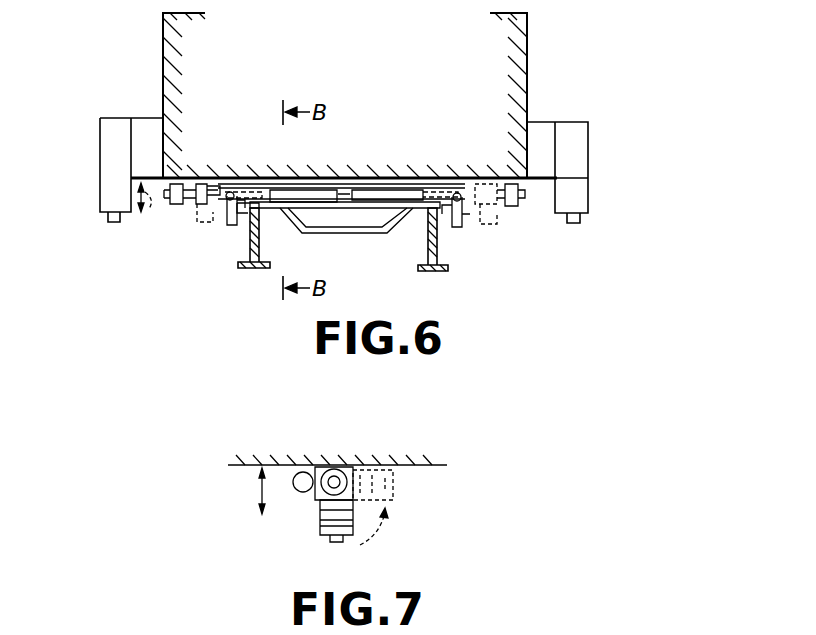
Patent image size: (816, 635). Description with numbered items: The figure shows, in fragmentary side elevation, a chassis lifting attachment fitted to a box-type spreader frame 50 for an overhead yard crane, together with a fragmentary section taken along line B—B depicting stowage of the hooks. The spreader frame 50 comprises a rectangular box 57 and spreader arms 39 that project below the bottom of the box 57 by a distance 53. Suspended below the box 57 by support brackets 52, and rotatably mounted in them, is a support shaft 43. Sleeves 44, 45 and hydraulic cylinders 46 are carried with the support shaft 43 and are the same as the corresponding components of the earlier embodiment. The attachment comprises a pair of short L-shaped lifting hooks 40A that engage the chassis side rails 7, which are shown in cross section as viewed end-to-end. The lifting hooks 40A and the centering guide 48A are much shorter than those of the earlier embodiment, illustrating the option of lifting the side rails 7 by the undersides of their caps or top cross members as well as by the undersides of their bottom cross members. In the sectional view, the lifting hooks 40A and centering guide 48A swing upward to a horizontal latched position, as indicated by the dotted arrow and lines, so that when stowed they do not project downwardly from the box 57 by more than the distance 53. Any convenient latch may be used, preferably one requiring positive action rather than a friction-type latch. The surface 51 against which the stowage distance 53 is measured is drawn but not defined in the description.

In FIG. 6, the housing wall 50 is at (540, 39).
In FIG. 6, the wall hatching / side wall 57 is at (530, 68).
In FIG. 6, the side block 39 is at (100, 158).
In FIG. 6, the vertical adjustment arrow 53 is at (150, 212).
In FIG. 7, the vertical adjustment arrow 53 is at (258, 493).
In FIG. 6, the left adjusting bolt 52 is at (180, 206).
In FIG. 6, the bracket 43 is at (215, 183).
In FIG. 7, the bracket 43 is at (334, 482).
In FIG. 6, the support plate / rod 46 is at (312, 190).
In FIG. 7, the support plate / rod 46 is at (298, 493).
In FIG. 6, the support rod 45 is at (375, 190).
In FIG. 7, the support rod 45 is at (337, 480).
In FIG. 6, the right adjusting bolt 44 is at (458, 183).
In FIG. 6, the hanger bracket 48A is at (318, 237).
In FIG. 6, the leg / support post 40A is at (232, 239).
In FIG. 7, the leg / support post 40A is at (316, 542).
In FIG. 6, the right leg 7 is at (437, 250).
In FIG. 7, the ceiling surface 51 is at (236, 468).